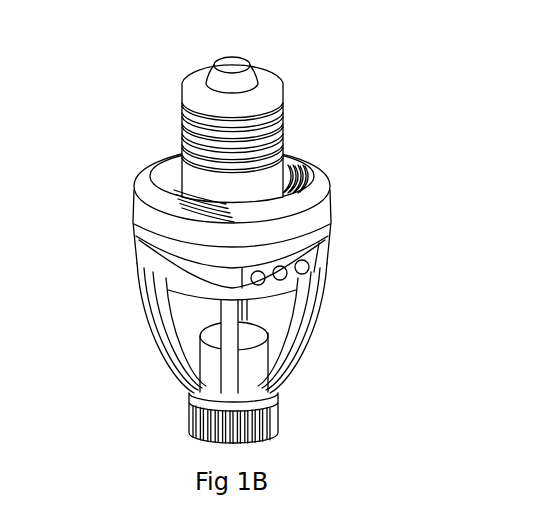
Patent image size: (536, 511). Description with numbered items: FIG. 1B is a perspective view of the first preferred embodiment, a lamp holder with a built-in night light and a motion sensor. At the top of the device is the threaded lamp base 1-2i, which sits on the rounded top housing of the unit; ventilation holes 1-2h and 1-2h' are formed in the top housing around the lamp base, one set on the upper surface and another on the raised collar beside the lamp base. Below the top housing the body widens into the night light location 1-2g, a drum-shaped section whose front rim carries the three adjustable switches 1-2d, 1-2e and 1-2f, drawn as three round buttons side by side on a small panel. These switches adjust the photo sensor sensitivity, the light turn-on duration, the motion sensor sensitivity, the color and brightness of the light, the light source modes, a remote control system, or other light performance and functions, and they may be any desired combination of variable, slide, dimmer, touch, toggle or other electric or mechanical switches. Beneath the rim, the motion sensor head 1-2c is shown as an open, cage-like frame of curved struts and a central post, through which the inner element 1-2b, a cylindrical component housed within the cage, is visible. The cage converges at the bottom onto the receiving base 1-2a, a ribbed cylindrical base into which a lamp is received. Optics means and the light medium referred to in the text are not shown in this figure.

The receiving base 1-2a is at (195, 430).
The lamp 1-2b is at (257, 340).
The motion sensor head 1-2c is at (206, 303).
The adjustable switch 1-2d is at (303, 267).
The adjustable switch 1-2e is at (281, 274).
The adjustable switch 1-2f is at (259, 279).
The night light location 1-2g is at (153, 252).
The ventilation hole 1-2h is at (345, 166).
The ventilation hole 1-2h' is at (157, 195).
The lamp base 1-2i is at (183, 112).